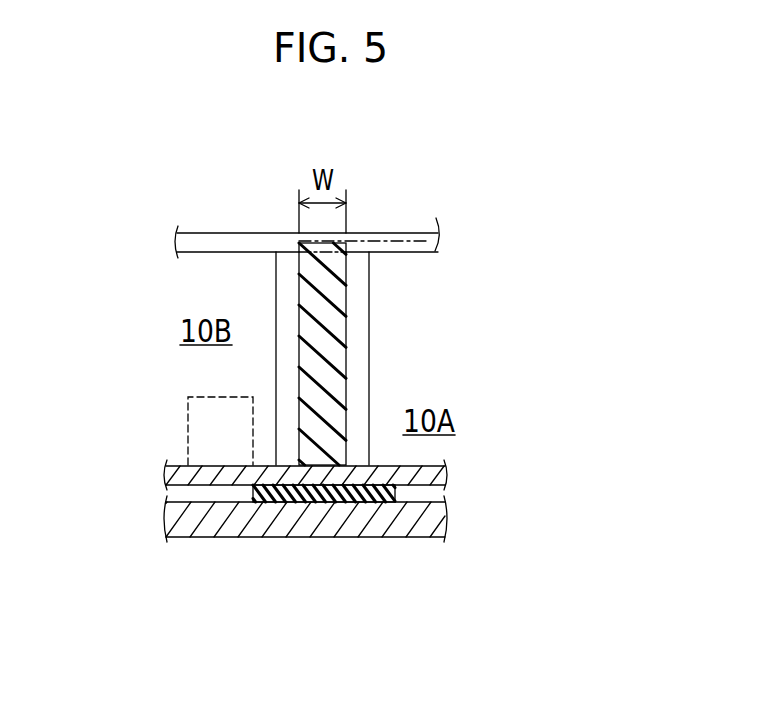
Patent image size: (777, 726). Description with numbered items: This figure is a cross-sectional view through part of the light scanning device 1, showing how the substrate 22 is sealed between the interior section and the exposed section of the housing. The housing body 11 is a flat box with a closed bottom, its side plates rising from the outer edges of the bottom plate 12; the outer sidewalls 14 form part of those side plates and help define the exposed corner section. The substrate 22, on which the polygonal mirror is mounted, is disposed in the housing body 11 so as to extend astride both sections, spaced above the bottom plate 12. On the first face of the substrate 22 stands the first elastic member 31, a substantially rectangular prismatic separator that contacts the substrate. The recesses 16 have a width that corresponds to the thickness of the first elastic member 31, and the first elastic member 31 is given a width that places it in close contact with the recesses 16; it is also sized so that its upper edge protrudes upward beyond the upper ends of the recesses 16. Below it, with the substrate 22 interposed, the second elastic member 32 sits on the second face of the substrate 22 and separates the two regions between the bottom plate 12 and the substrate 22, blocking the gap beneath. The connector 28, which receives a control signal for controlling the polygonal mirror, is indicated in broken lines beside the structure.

The light scanning device 1 is at (205, 220).
The housing body 11 is at (402, 232).
The bottom plate 12 is at (210, 528).
The outer sidewalls 14 is at (246, 266).
The recesses 16 is at (347, 365).
The substrate 22 is at (410, 478).
The connector 28 is at (188, 406).
The first elastic member 31 is at (325, 313).
The second elastic member 32 is at (324, 499).